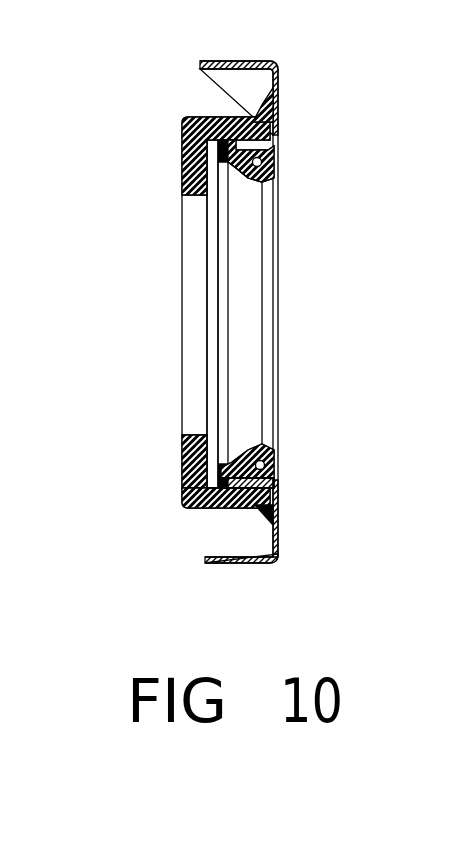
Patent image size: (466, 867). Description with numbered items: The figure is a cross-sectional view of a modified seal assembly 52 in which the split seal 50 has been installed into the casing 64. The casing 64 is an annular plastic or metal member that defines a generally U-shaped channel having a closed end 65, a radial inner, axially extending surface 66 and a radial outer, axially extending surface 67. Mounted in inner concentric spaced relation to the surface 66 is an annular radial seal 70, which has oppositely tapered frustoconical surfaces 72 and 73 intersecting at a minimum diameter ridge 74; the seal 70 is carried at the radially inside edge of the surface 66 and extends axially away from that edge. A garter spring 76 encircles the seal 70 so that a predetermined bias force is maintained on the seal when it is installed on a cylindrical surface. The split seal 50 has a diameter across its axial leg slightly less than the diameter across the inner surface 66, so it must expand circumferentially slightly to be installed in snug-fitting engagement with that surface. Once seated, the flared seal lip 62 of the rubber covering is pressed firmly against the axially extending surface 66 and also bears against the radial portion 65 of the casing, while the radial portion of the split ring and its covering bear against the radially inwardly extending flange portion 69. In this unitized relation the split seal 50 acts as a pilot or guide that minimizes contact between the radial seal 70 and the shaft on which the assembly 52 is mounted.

The split seal 50 is at (182, 465).
The seal assembly 52 is at (280, 532).
The seal lip 62 is at (268, 526).
The casing 64 is at (282, 507).
The closed end 65 is at (282, 487).
The radial inner axially extending surface 66 is at (282, 475).
The radial outer axially extending surface 67 is at (242, 563).
The radially inwardly extending flange portion 69 is at (182, 160).
The radial seal 70 is at (325, 209).
The frustoconical surface 72 is at (263, 181).
The frustoconical surface 73 is at (250, 178).
The minimum diameter ridge 74 is at (272, 181).
The garter spring 76 is at (274, 150).